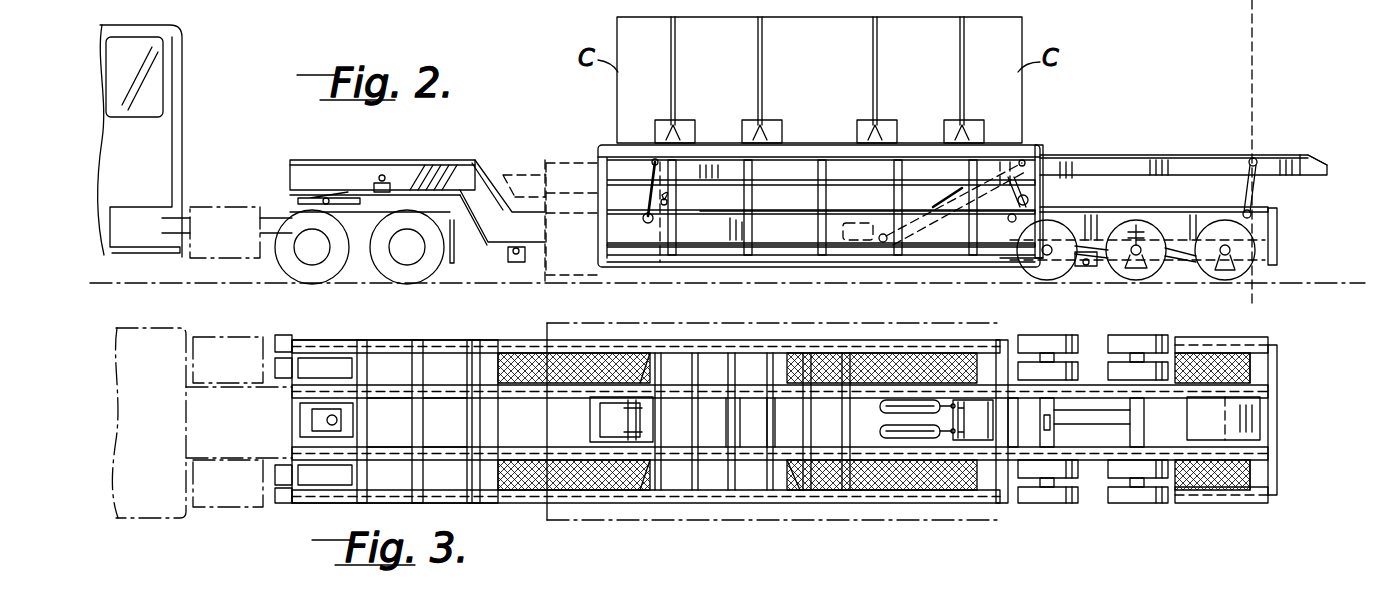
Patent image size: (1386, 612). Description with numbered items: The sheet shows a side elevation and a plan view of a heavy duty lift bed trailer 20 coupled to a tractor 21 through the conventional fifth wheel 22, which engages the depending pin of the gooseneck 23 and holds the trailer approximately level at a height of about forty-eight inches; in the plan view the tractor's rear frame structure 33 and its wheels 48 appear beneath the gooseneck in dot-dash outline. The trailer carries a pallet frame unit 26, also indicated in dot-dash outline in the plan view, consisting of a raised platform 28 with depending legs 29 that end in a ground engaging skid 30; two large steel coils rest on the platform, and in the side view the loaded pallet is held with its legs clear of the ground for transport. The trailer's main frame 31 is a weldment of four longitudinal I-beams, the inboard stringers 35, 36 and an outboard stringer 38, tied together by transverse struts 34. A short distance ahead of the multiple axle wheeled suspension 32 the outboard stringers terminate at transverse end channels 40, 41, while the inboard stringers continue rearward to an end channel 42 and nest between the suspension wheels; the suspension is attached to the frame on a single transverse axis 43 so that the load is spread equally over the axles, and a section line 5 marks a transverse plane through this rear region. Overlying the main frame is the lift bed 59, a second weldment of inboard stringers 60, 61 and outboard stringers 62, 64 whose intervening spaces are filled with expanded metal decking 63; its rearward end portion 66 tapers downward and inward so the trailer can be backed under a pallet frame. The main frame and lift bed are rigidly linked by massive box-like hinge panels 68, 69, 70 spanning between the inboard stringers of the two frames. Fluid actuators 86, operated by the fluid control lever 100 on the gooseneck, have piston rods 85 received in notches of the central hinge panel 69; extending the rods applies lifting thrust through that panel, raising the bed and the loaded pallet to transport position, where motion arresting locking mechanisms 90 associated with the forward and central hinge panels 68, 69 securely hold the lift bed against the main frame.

In FIG. 2, the section line 5- 5 is at (1216, 14).
In FIG. 2, the lift bed trailer 20 is at (1150, 136).
In FIG. 2, the tractor 21 is at (186, 78).
In FIG. 3, the tractor 21 is at (181, 328).
In FIG. 2, the fifth wheel 22 is at (296, 197).
In FIG. 2, the gooseneck 23 is at (302, 160).
In FIG. 2, the pallet frame unit 26 is at (601, 147).
In FIG. 3, the pallet frame unit 26 is at (722, 520).
In FIG. 2, the raised platform 28 is at (708, 142).
In FIG. 2, the depending legs 29 is at (835, 191).
In FIG. 2, the ground engaging skid 30 is at (752, 268).
In FIG. 2, the main frame 31 is at (792, 248).
In FIG. 3, the main frame 31 is at (405, 339).
In FIG. 2, the multiple axle wheeled suspension 32 is at (1110, 272).
In FIG. 3, the tractor frame plate 33 is at (322, 340).
In FIG. 3, the transverse struts 34 is at (440, 355).
In FIG. 3, the inboard stringer 35 is at (292, 453).
In FIG. 3, the inboard stringer 36 is at (292, 391).
In FIG. 3, the outboard stringer 38 is at (302, 504).
In FIG. 3, the transverse end channel 40 is at (1003, 500).
In FIG. 3, the transverse end channel 41 is at (996, 356).
In FIG. 2, the end channel 42 is at (1280, 236).
In FIG. 3, the end channel 42 is at (1278, 478).
In FIG. 2, the transverse axis 43 is at (1140, 226).
In FIG. 2, the wheels 48 is at (1028, 270).
In FIG. 3, the wheels 48 is at (1085, 320).
In FIG. 2, the lift bed 59 is at (1168, 155).
In FIG. 3, the lift bed 59 is at (530, 350).
In FIG. 3, the inboard stringer 60 is at (712, 447).
In FIG. 3, the inboard stringer 61 is at (782, 404).
In FIG. 3, the outboard stringer 62 is at (606, 504).
In FIG. 3, the decking 63 is at (588, 352).
In FIG. 3, the outboard stringer 64 is at (646, 340).
In FIG. 2, the rearward end portion 66 is at (1312, 154).
In FIG. 3, the rearward end portion 66 is at (1268, 372).
In FIG. 2, the forward hinge panel 68 is at (652, 191).
In FIG. 3, the forward hinge panel 68 is at (600, 418).
In FIG. 2, the central hinge panel 69 is at (1045, 158).
In FIG. 3, the central hinge panel 69 is at (980, 440).
In FIG. 2, the rear hinge panel 70 is at (1260, 200).
In FIG. 3, the rear hinge panel 70 is at (1248, 418).
In FIG. 2, the piston rods 85 is at (1002, 158).
In FIG. 2, the fluid actuators 86 is at (940, 205).
In FIG. 3, the fluid actuators 86 is at (905, 400).
In FIG. 2, the motion arresting locking mechanism 90 is at (668, 196).
In FIG. 2, the fluid control lever 100 is at (384, 176).